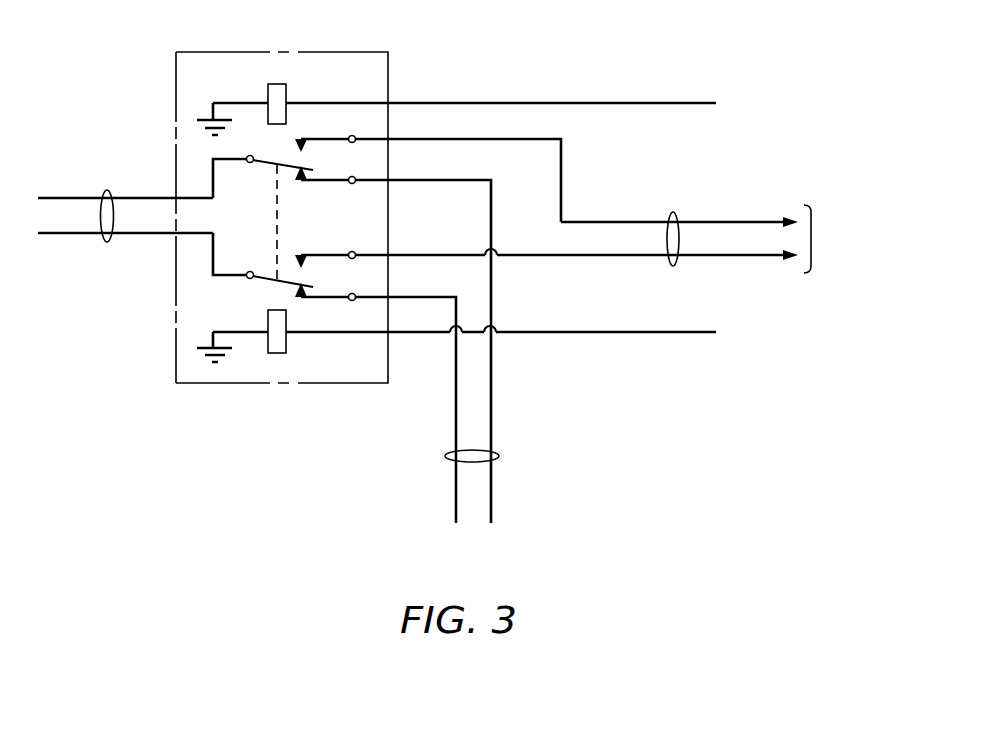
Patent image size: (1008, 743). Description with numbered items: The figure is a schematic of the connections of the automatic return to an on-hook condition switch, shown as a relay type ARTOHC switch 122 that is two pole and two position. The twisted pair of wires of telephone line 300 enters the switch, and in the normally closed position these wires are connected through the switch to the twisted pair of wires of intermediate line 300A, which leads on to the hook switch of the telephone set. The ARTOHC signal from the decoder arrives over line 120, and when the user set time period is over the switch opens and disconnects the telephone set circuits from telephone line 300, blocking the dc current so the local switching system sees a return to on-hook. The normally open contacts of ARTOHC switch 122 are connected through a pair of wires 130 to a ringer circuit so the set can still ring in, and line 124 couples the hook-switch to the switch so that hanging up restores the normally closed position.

The ARTOHC switch 122 is at (342, 40).
The telephone line 300 is at (107, 242).
The line 120 is at (636, 103).
The line 124 is at (641, 332).
The pair of wires 130 is at (673, 212).
The intermediate line 300A is at (499, 456).